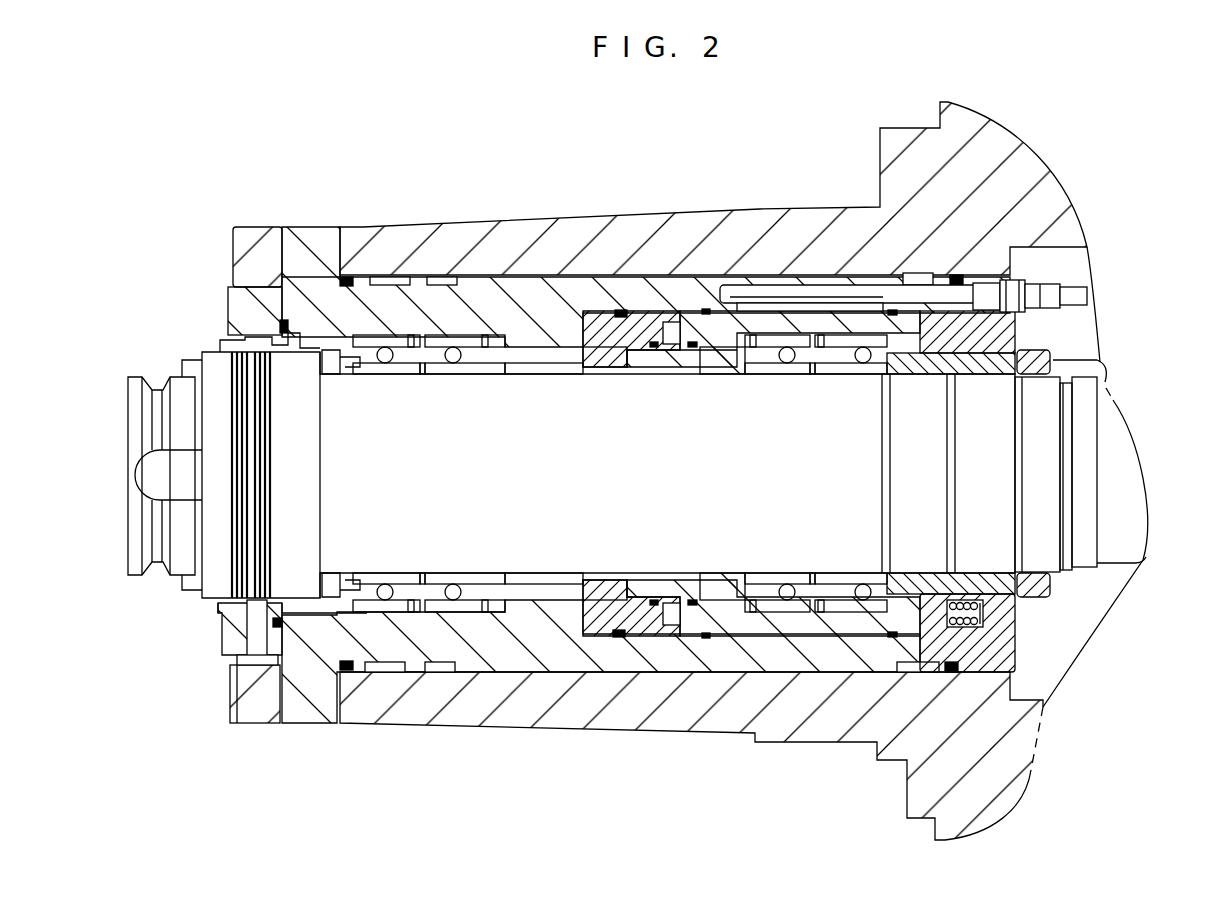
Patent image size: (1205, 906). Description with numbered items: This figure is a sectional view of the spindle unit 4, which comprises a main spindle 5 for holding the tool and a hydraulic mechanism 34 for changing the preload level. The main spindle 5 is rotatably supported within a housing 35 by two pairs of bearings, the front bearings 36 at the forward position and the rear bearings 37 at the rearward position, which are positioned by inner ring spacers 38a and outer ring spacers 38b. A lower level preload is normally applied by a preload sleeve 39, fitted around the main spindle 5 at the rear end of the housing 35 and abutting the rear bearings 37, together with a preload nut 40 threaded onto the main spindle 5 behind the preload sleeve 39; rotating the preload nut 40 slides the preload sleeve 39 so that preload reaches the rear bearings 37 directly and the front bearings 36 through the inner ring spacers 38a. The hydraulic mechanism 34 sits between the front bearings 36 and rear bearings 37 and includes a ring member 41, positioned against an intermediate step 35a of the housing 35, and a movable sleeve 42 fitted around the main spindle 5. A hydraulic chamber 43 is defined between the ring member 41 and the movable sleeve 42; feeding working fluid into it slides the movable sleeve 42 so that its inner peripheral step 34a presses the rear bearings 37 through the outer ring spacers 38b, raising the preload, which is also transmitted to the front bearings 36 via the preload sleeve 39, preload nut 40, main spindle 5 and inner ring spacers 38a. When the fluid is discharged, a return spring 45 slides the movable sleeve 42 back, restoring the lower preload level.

The spindle unit 4 is at (361, 218).
The main spindle 5 is at (208, 599).
The hydraulic mechanism 34 is at (835, 373).
The inner peripheral step 34a is at (752, 368).
The housing 35 is at (485, 292).
The intermediate step 35a is at (605, 350).
The front bearings 36 is at (385, 378).
The rear bearings 37 is at (787, 376).
The inner ring spacers 38a is at (350, 585).
The outer ring spacers 38b is at (412, 612).
The preload sleeve 39 is at (1000, 376).
The preload nut 40 is at (1100, 365).
The ring member 41 is at (603, 312).
The movable sleeve 42 is at (744, 330).
The hydraulic chamber 43 is at (668, 322).
The return spring 45 is at (980, 622).